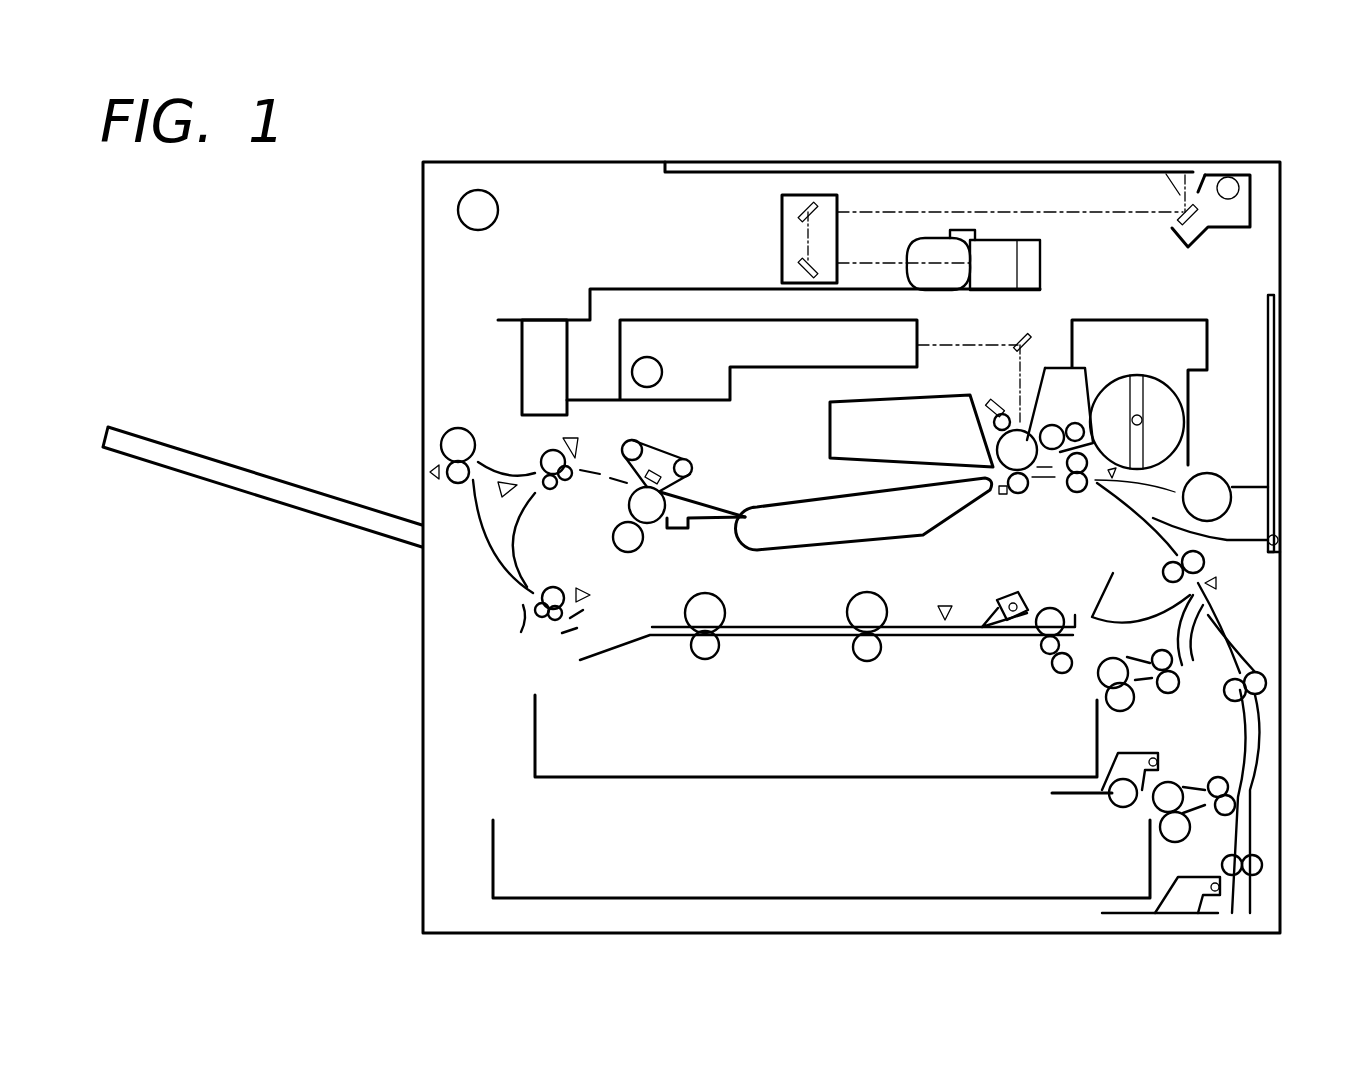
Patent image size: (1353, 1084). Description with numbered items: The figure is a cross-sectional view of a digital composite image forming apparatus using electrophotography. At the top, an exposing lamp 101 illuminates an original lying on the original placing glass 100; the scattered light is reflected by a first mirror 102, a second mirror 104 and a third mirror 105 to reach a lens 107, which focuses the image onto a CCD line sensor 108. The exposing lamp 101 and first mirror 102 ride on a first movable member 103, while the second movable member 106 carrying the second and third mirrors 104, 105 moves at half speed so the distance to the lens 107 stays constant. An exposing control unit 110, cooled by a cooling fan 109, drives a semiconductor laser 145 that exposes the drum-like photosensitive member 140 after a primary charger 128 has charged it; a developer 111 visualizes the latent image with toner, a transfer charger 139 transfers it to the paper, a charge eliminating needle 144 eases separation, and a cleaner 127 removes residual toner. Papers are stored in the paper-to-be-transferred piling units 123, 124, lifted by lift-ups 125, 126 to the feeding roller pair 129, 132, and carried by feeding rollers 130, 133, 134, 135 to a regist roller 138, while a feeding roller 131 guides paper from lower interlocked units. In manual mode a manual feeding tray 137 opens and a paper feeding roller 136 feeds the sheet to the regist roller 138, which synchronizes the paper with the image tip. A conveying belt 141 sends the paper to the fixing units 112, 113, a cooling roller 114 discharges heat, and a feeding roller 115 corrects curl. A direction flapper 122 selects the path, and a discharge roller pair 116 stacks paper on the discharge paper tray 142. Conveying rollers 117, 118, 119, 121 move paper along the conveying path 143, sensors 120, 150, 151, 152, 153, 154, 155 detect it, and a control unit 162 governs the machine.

The original placing glass 100 is at (1075, 162).
The exposing lamp 101 is at (1228, 185).
The first mirror 102 is at (1197, 238).
The first movable member 103 is at (1240, 228).
The second mirror 104 is at (800, 210).
The third mirror 105 is at (800, 270).
The second movable member 106 is at (782, 248).
The lens 107 is at (907, 258).
The CCD line sensor 108 is at (1033, 258).
The cooling fan 109 is at (535, 330).
The exposing control unit 110 is at (658, 328).
The developer 111 is at (1138, 325).
The fixing unit 112 is at (660, 447).
The fixing unit 113 is at (655, 520).
The cooling roller 114 is at (622, 533).
The feeding roller 115 is at (553, 488).
The discharge roller pair 116 is at (458, 440).
The conveying roller 117 is at (540, 598).
The conveying roller 118 is at (710, 655).
The conveying roller 119 is at (870, 660).
The sensor 120 is at (1000, 597).
The conveying roller 121 is at (1040, 648).
The direction flapper 122 is at (513, 480).
The paper-to-be-transferred piling unit 123 is at (535, 735).
The paper-to-be-transferred piling unit 124 is at (493, 848).
The lift-up 125 is at (1066, 795).
The lift-up 126 is at (1120, 913).
The cleaner 127 is at (830, 427).
The primary charger 128 is at (995, 408).
The feeding roller pair 129 is at (1110, 688).
The feeding roller 130 is at (1170, 692).
The feeding roller 131 is at (1222, 865).
The feeding roller pair 132 is at (1160, 827).
The feeding roller 133 is at (1207, 783).
The feeding roller 134 is at (1237, 702).
The feeding roller 135 is at (1163, 568).
The paper feeding roller 136 is at (1207, 483).
The manual feeding tray 137 is at (1270, 372).
The regist roller 138 is at (1077, 493).
The transfer charger 139 is at (1022, 492).
The photosensitive member 140 is at (1005, 455).
The conveying belt 141 is at (800, 540).
The discharge paper tray 142 is at (152, 450).
The conveying path 143 is at (636, 642).
The charge eliminating needle 144 is at (1003, 496).
The semiconductor laser 145 is at (662, 372).
The sensor 150 is at (1218, 584).
The sensor 151 is at (1106, 477).
The sensor 152 is at (577, 440).
The sensor 153 is at (441, 476).
The sensor 154 is at (592, 596).
The sensor 155 is at (943, 607).
The control unit 162 is at (498, 210).